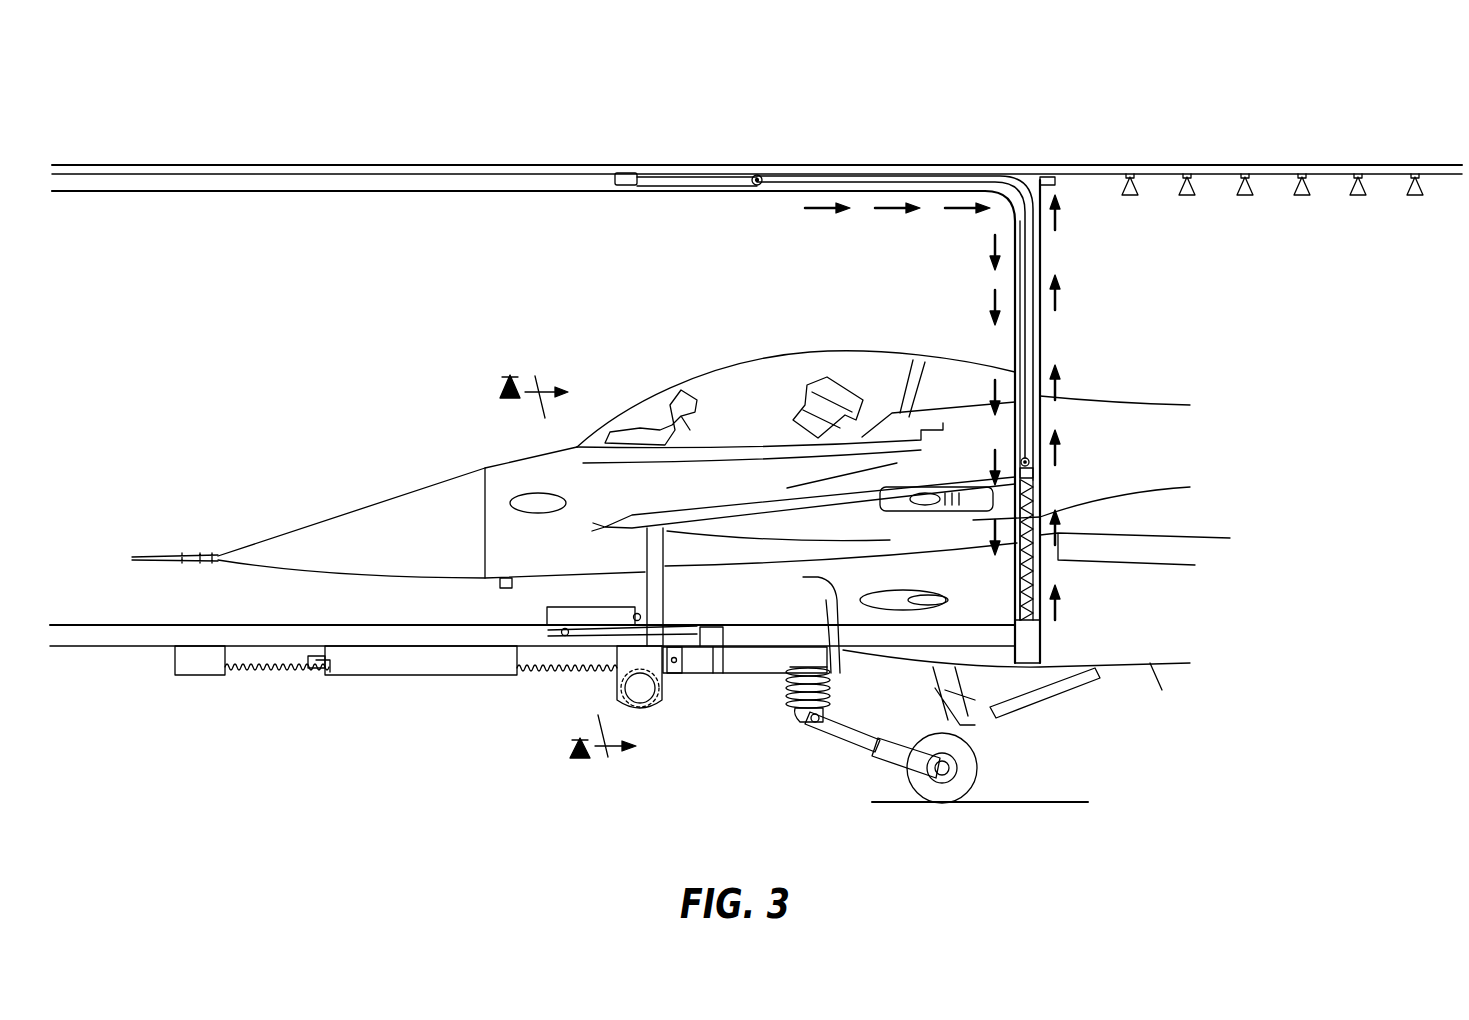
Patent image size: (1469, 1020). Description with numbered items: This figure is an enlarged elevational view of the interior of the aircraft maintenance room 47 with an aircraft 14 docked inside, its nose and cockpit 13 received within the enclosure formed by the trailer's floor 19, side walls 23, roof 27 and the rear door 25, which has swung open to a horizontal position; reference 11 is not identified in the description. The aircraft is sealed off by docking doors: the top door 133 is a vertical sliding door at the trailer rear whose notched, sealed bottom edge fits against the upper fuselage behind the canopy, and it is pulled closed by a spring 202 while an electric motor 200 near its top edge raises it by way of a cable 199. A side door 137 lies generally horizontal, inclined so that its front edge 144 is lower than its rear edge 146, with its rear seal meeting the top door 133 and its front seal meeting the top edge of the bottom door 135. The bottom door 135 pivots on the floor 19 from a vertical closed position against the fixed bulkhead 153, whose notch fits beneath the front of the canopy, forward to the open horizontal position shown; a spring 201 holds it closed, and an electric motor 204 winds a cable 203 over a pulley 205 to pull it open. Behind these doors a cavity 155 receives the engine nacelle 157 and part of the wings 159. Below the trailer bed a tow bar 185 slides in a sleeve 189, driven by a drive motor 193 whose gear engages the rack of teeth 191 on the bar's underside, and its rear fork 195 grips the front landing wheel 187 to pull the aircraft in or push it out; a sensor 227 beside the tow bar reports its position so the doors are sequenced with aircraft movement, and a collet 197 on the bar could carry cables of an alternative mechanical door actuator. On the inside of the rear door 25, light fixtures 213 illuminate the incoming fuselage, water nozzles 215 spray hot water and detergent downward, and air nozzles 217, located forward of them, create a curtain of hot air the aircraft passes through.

The aircraft maintenance facility 11 is at (390, 135).
The cockpit 13 is at (690, 378).
The aircraft 14 is at (332, 502).
The floor 19 is at (122, 626).
The side walls 23 is at (237, 215).
The rear door 25 is at (1222, 165).
The roof 27 is at (327, 165).
The aircraft maintenance room 47 is at (150, 262).
The top door 133 is at (1036, 285).
The bottom door 135 is at (545, 613).
The side door 137 is at (767, 513).
The front edges 144 is at (582, 462).
The rear edges 146 is at (1040, 478).
The bulkhead 153 is at (608, 636).
The cavity 155 is at (730, 628).
The engine nacelle 157 is at (838, 675).
The wings 159 is at (1130, 489).
The tow bar 185 is at (275, 672).
The front landing wheel 187 is at (962, 775).
The sleeve 189 is at (417, 665).
The rack of teeth 191 is at (310, 670).
The drive motor 193 is at (640, 716).
The fork 195 is at (938, 803).
The collet 197 is at (673, 676).
The cable 199 is at (729, 172).
The electric motor 200 is at (634, 172).
The spring 201 is at (640, 616).
The spring 202 is at (1040, 566).
The cable 203 is at (578, 625).
The electric motor 204 is at (715, 648).
The pulley 205 is at (562, 636).
The light fixtures 213 is at (1183, 176).
The water nozzles 215 is at (1302, 200).
The air nozzles 217 is at (1130, 200).
The sensor 227 is at (325, 668).